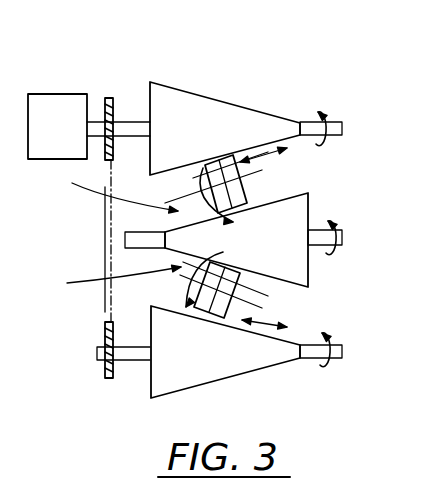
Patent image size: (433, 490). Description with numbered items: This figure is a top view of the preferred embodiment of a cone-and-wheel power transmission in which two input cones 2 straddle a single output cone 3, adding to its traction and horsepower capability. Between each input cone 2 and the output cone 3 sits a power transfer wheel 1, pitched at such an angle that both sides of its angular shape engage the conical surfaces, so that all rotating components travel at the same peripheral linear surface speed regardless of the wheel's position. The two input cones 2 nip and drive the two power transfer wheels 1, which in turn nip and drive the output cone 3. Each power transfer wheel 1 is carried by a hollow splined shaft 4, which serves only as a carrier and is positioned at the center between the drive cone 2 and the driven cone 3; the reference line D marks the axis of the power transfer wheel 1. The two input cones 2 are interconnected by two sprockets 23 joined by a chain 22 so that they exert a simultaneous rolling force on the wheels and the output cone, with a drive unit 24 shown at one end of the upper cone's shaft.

The power transfer wheel 1 is at (245, 201).
The input cone 2 is at (203, 110).
The output cone 3 is at (291, 221).
The hollow splined shaft 4 is at (283, 167).
The chain 22 is at (104, 228).
The sprocket 23 is at (112, 98).
The motor 24 is at (52, 93).
The axis of the power transfer wheel D is at (110, 238).